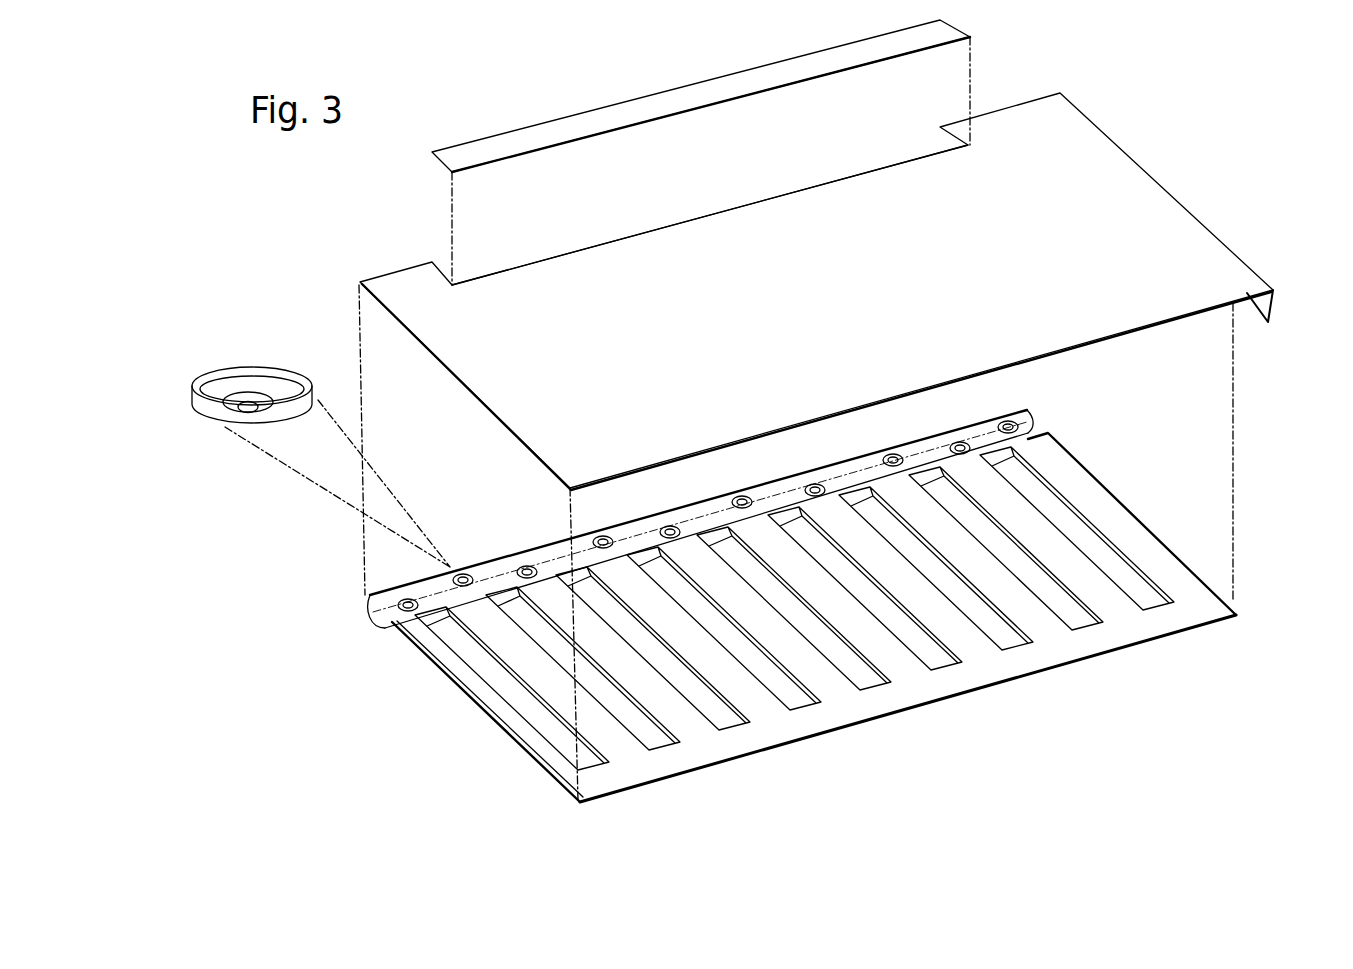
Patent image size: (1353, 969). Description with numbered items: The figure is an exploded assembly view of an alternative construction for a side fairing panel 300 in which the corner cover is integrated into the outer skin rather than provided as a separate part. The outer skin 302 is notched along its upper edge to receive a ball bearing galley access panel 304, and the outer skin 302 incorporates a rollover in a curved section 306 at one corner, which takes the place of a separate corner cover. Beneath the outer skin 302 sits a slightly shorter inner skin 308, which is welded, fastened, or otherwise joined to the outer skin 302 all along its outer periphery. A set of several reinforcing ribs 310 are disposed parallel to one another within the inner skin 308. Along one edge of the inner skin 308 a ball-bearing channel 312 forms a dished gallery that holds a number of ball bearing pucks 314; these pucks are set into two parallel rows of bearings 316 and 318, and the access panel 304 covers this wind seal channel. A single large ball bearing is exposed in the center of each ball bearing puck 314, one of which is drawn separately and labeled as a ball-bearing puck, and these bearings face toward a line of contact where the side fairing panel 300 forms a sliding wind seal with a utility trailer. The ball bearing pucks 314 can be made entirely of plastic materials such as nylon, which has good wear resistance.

The side fairing panel 300 is at (279, 228).
The outer skin 302 is at (816, 446).
The ball bearing galley access panel 304 is at (701, 152).
The curved section 306 is at (1282, 285).
The inner skin 308 is at (814, 617).
The reinforcing ribs 310 is at (858, 600).
The ball-bearing channel 312 is at (390, 636).
The ball bearing pucks 314 is at (306, 362).
The row of bearings 316 is at (522, 563).
The row of bearings 318 is at (607, 537).